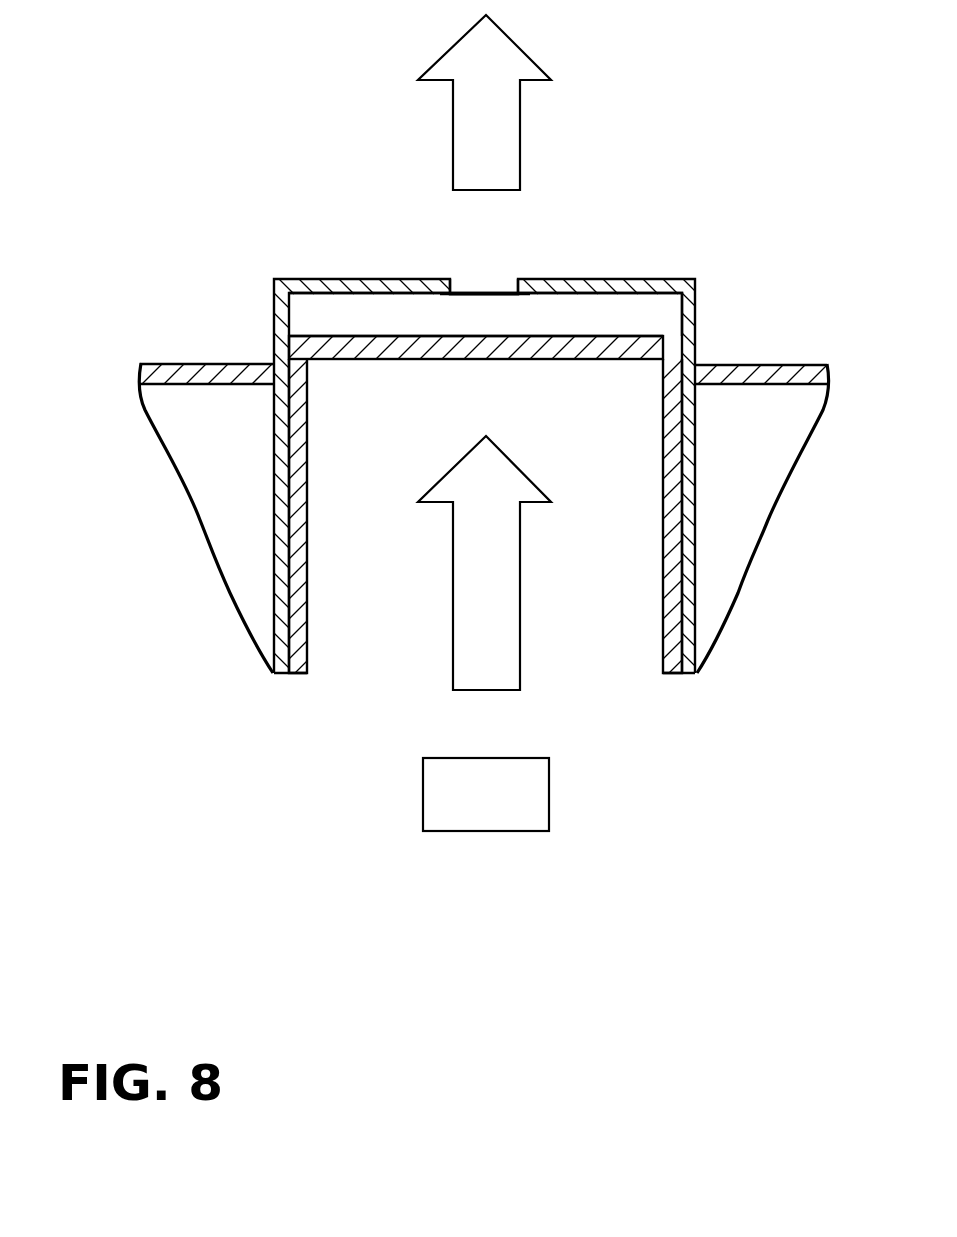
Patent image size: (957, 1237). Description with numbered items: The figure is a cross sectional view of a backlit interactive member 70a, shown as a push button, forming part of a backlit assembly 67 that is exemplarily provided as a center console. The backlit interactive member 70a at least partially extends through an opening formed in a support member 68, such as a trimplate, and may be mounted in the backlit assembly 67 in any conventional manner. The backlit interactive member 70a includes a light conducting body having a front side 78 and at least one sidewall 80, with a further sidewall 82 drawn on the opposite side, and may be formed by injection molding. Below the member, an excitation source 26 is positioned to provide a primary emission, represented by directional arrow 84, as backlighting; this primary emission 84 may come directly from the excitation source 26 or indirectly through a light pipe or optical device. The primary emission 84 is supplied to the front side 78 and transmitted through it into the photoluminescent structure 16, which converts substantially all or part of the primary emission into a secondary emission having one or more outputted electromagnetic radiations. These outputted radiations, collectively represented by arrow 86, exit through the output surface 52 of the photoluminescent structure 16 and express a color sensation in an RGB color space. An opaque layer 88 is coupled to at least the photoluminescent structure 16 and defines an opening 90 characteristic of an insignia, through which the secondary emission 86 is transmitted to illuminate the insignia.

The secondary emission 86 is at (453, 135).
The primary emission 84 is at (453, 633).
The excitation source 26 is at (549, 792).
The backlit assembly 67 is at (624, 188).
The opaque layer 88 is at (668, 280).
The output surface 52 is at (512, 300).
The opening 90 is at (483, 286).
The photoluminescent structure 16 is at (643, 322).
The front side 78 is at (610, 360).
The backlit interactive member 70a is at (373, 326).
The sidewall 80 is at (308, 505).
The right side wall 82 is at (662, 583).
The support member 68 is at (762, 375).